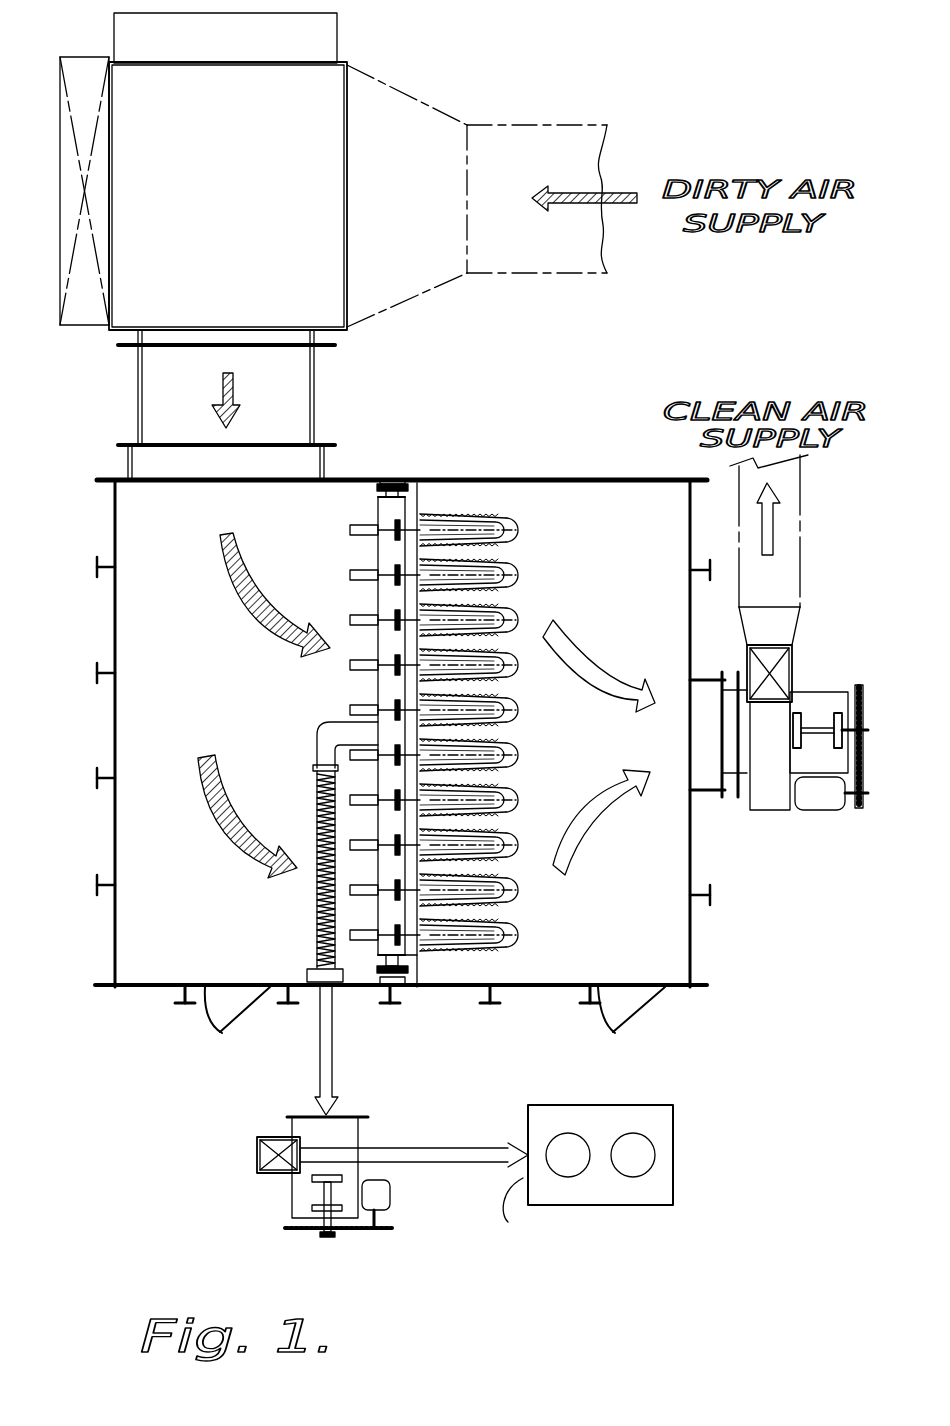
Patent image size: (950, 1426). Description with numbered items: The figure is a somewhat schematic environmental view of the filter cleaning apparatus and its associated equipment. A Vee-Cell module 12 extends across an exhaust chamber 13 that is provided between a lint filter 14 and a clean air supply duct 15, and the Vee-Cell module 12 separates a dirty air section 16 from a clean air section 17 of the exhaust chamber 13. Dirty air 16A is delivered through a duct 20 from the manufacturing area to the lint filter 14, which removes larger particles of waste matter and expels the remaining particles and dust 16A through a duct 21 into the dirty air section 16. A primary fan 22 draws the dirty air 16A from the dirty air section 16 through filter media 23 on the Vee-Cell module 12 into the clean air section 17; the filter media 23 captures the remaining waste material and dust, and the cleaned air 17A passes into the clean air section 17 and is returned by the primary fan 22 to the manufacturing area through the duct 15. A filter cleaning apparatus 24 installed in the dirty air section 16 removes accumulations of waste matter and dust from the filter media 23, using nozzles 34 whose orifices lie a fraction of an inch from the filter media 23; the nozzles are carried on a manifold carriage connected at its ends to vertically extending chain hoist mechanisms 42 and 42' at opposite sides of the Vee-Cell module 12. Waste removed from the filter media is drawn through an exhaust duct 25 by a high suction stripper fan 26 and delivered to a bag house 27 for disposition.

The Vee-Cell module 12 is at (485, 503).
The exhaust chamber 13 is at (575, 480).
The lint filter 14 is at (235, 268).
The clean air supply duct 15 is at (800, 589).
The dirty air section 16 is at (225, 707).
The dirty air 16A is at (625, 204).
The clean air section 17 is at (595, 761).
The clean air 17A is at (582, 650).
The duct 20 is at (613, 128).
The duct 21 is at (138, 400).
The primary fan 22 is at (773, 780).
The filter media 23 is at (500, 578).
The filter cleaning apparatus 24 is at (368, 552).
The exhaust duct 25 is at (315, 912).
The high suction stripper fan 26 is at (366, 1140).
The bag house 27 is at (665, 1135).
The nozzle 34 is at (497, 950).
The chain hoist mechanism 42 is at (425, 1001).
The chain hoist mechanism 42' is at (335, 501).